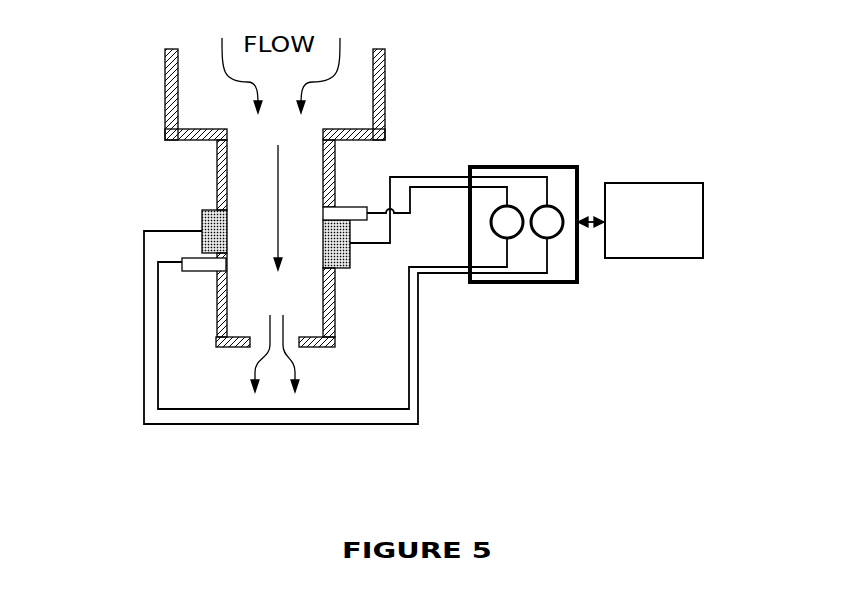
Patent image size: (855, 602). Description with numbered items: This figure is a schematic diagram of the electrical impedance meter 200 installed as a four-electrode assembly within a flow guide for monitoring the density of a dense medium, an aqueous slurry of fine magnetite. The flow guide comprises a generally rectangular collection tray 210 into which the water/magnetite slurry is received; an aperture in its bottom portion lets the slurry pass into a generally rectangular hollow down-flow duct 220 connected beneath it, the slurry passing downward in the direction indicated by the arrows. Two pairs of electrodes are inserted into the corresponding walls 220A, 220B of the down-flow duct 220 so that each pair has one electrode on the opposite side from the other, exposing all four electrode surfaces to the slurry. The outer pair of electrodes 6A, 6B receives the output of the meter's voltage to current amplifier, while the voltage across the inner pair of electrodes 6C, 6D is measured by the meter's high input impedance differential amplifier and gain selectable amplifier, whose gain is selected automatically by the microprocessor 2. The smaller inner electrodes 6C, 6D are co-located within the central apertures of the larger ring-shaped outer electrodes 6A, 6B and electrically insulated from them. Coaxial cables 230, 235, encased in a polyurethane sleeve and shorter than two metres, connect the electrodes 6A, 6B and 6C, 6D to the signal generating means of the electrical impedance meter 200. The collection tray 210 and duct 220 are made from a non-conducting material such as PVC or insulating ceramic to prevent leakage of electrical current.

The microprocessor 2 is at (703, 197).
The electrical impedance meter 200 is at (570, 167).
The collection tray 210 is at (385, 72).
The down-flow duct 220 is at (233, 370).
The wall of the down-flow duct 220A is at (212, 288).
The wall of the down-flow duct 220B is at (335, 315).
The coaxial cable 230 is at (144, 292).
The coaxial cable 235 is at (203, 411).
The outer electrode 6A is at (350, 268).
The outer electrode 6B is at (202, 210).
The inner electrode 6C is at (358, 207).
The inner electrode 6D is at (182, 258).